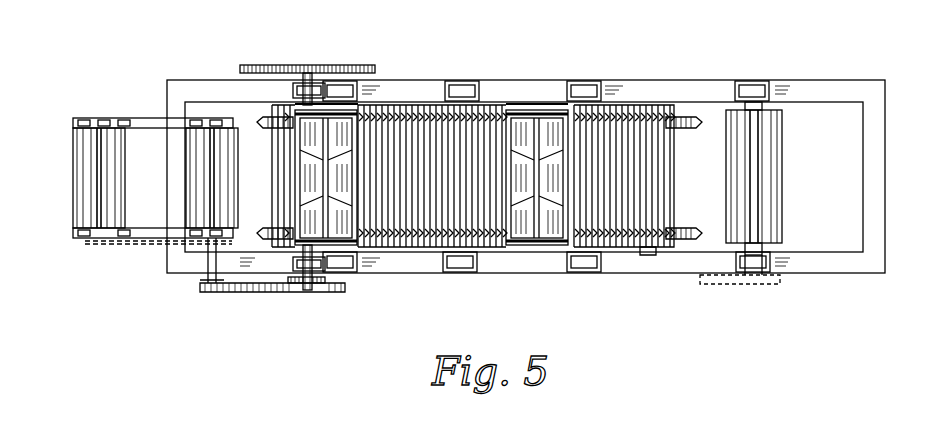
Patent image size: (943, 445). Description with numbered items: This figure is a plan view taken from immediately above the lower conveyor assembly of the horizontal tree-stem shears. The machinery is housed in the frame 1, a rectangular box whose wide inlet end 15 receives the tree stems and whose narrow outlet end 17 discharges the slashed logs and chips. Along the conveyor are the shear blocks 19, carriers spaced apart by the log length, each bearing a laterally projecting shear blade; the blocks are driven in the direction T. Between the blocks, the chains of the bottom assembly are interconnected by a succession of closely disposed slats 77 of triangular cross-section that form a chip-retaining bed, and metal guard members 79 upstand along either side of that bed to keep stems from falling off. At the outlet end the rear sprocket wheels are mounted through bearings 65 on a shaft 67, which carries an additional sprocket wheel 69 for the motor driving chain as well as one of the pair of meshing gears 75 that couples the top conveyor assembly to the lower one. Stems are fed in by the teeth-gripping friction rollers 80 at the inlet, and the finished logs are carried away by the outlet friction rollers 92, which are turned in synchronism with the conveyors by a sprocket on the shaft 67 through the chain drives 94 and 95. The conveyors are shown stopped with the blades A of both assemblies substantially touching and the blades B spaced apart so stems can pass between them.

The frame 1 is at (464, 83).
The inlet end 15 is at (718, 179).
The outlet end 17 is at (268, 176).
The shear blocks 19 is at (345, 127).
The bearings 65 is at (302, 88).
The shaft 67 is at (300, 262).
The additional sprocket wheel 69 is at (326, 280).
The meshing gear 75 is at (354, 66).
The slats 77 is at (655, 170).
The guard members 79 is at (690, 120).
The friction rollers 80 is at (770, 178).
The outlet friction rollers 92 is at (196, 178).
The chain drive 94 is at (248, 293).
The chain drive 95 is at (140, 243).
The blades A is at (330, 185).
The blades B is at (540, 188).
The direction T is at (404, 190).